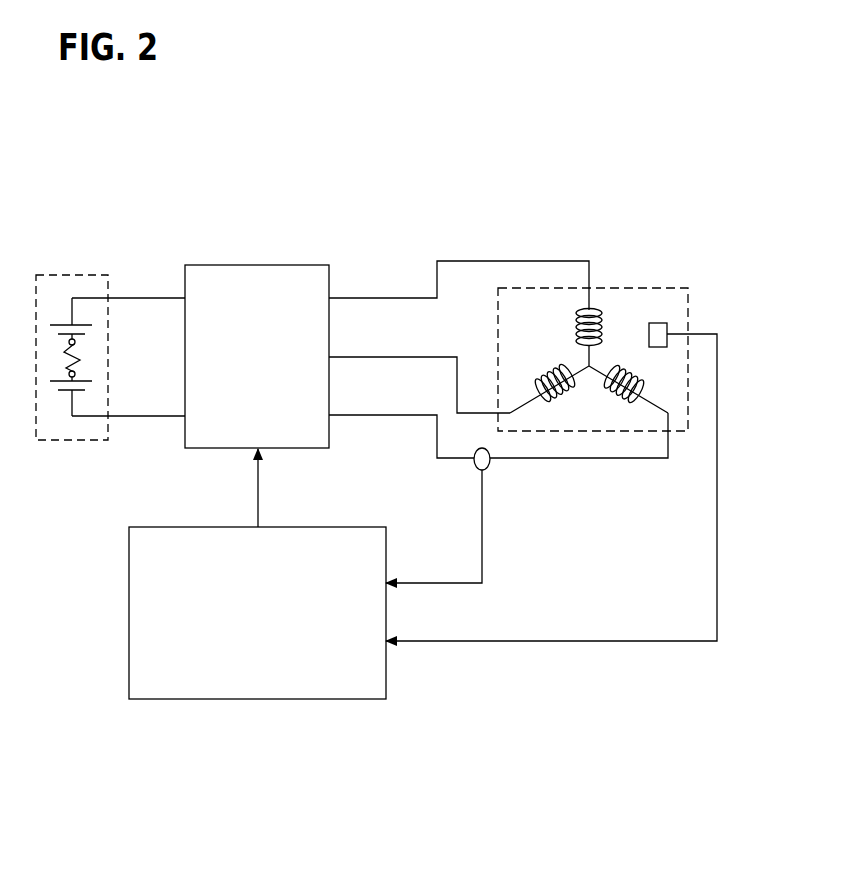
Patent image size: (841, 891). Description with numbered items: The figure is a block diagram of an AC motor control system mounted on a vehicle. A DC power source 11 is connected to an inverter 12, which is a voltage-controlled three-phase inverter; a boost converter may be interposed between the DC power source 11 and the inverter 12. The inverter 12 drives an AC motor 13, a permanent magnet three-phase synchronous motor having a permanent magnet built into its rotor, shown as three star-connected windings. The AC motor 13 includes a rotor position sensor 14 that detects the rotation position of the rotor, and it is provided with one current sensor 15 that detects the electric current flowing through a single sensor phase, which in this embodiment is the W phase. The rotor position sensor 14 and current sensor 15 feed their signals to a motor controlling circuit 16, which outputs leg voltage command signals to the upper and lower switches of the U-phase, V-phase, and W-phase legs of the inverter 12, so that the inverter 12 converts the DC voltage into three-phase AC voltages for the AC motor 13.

The DC power source 11 is at (67, 273).
The inverter 12 is at (258, 264).
The AC motor 13 is at (647, 288).
The rotor position sensor 14 is at (659, 322).
The current sensor 15 is at (488, 470).
The motor controlling circuit 16 is at (257, 700).